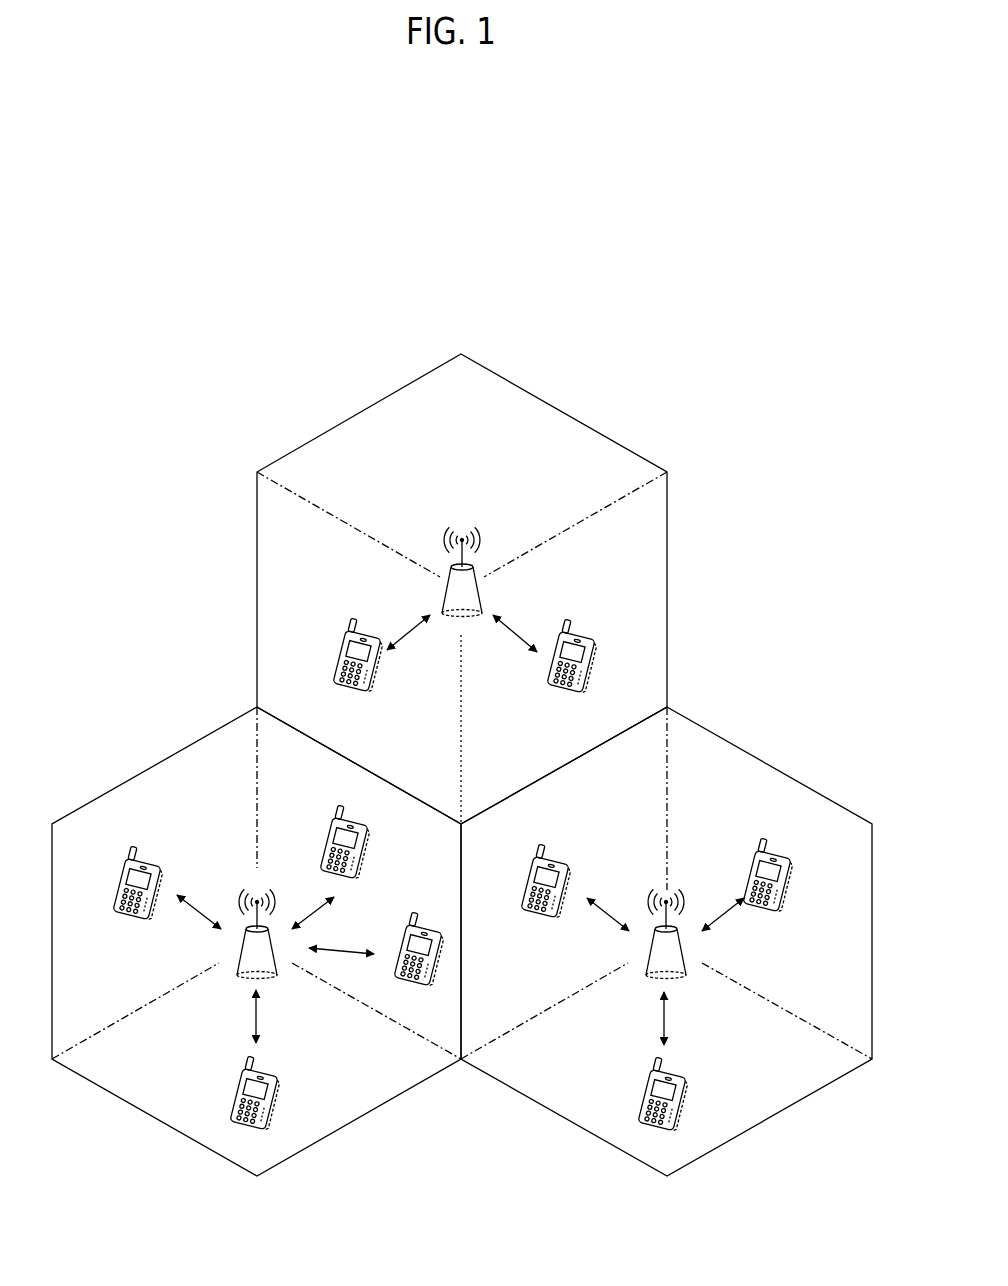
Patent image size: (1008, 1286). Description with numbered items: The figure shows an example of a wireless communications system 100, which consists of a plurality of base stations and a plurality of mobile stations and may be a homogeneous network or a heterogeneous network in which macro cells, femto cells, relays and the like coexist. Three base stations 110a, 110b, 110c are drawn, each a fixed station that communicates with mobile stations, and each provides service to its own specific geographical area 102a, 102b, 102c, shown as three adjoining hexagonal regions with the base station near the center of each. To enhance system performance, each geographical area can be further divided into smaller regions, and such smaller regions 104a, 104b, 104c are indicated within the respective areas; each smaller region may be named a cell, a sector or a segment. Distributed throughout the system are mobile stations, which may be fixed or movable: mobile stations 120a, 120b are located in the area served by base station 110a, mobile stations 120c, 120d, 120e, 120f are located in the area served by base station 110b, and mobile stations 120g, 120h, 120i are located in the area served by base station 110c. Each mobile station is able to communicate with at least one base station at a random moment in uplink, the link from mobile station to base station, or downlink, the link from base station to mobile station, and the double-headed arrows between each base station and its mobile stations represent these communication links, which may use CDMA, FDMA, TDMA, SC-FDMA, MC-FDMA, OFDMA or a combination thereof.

The wireless communications system 100 is at (736, 404).
The specific geographical area 102a is at (562, 410).
The specific geographical area 102b is at (154, 763).
The specific geographical area 102c is at (767, 763).
The smaller region 104a is at (479, 431).
The smaller region 104b is at (442, 753).
The smaller region 104c is at (542, 753).
The base station 110a is at (462, 536).
The base station 110b is at (277, 969).
The base station 110c is at (687, 969).
The mobile station 120a is at (337, 655).
The mobile station 120b is at (590, 662).
The mobile station 120c is at (143, 856).
The mobile station 120d is at (324, 820).
The mobile station 120e is at (418, 928).
The mobile station 120f is at (236, 1089).
The mobile station 120g is at (551, 857).
The mobile station 120h is at (643, 1086).
The mobile station 120i is at (786, 910).